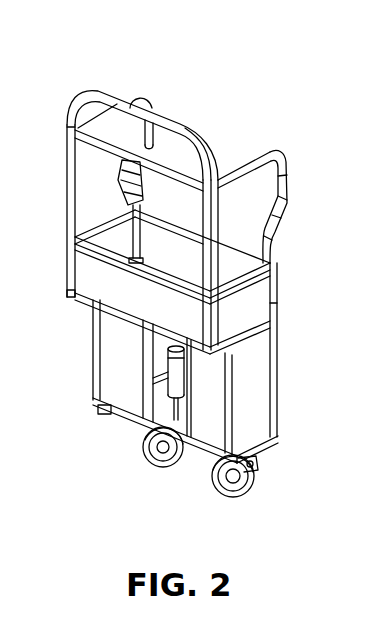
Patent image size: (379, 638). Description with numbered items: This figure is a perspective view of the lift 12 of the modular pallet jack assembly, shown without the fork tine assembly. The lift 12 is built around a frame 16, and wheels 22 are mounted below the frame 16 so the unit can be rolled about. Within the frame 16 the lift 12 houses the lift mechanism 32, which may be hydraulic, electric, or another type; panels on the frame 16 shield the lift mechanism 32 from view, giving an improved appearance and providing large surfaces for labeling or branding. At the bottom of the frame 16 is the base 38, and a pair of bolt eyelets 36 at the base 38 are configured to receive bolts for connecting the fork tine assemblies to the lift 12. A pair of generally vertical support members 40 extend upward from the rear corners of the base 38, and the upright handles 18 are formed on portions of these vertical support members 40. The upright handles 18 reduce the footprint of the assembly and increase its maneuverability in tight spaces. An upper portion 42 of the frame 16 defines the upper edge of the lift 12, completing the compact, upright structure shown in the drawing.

The lift 12 is at (88, 86).
The frame 16 is at (92, 350).
The upright handles 18 is at (155, 133).
The wheels 22 is at (222, 493).
The lift mechanism 32 is at (167, 383).
The bolt eyelets 36 is at (263, 463).
The base 38 is at (277, 445).
The vertical support members 40 is at (277, 305).
The upper portion 42 is at (207, 147).